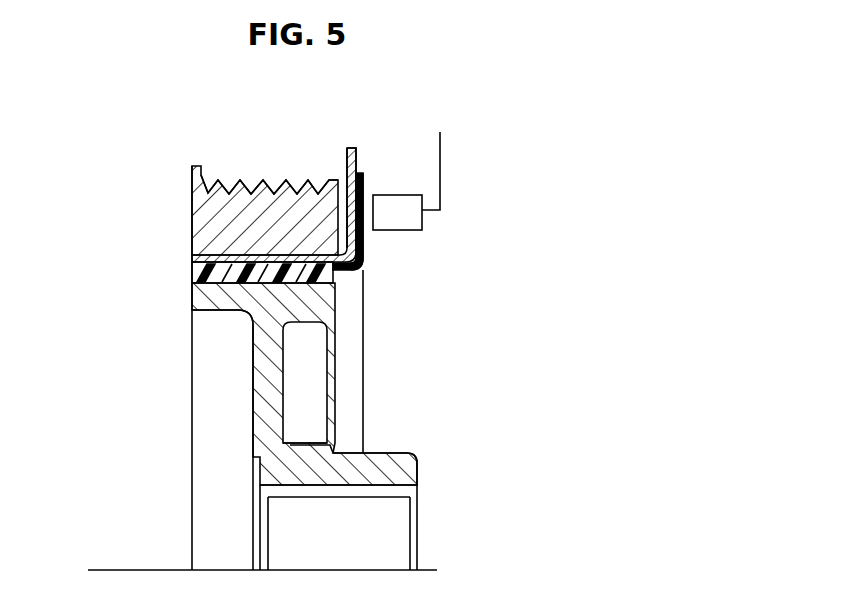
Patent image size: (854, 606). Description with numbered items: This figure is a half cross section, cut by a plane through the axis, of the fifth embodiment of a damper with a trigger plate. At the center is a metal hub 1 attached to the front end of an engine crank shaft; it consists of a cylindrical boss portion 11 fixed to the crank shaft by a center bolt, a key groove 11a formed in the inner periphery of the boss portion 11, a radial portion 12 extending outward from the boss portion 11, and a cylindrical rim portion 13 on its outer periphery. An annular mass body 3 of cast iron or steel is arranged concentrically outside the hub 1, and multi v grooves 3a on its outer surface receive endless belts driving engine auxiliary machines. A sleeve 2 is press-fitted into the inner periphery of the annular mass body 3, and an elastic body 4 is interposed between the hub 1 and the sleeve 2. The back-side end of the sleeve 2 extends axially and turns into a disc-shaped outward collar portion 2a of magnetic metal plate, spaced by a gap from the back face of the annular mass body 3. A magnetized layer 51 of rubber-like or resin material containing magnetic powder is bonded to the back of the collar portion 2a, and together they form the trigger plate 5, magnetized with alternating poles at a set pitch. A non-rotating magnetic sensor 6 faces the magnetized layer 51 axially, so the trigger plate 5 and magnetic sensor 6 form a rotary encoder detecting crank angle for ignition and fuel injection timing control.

The hub 1 is at (401, 453).
The sleeve 2 is at (190, 258).
The outward collar portion 2a is at (345, 240).
The annular mass body 3 is at (191, 178).
The multi v grooves 3a is at (255, 187).
The elastic body 4 is at (190, 273).
The trigger plate 5 is at (351, 148).
The magnetized layer 51 is at (363, 242).
The magnetic sensor 6 is at (395, 203).
The boss portion 11 is at (407, 472).
The key groove 11a is at (360, 490).
The radial portion 12 is at (257, 393).
The rim portion 13 is at (190, 315).